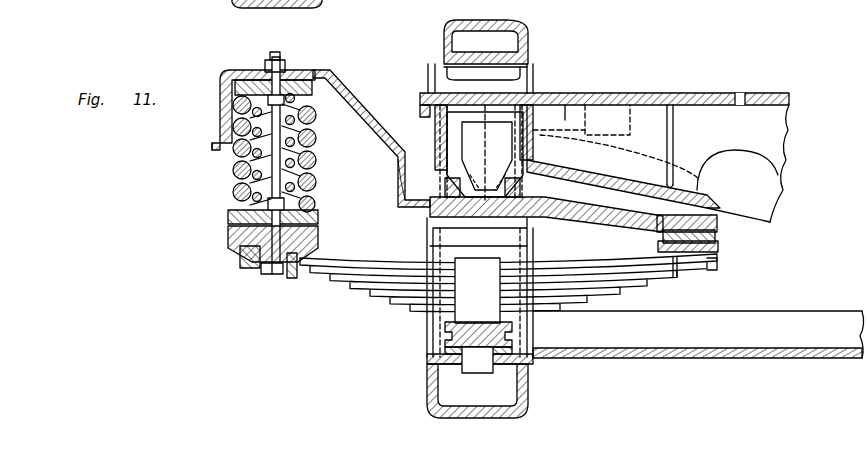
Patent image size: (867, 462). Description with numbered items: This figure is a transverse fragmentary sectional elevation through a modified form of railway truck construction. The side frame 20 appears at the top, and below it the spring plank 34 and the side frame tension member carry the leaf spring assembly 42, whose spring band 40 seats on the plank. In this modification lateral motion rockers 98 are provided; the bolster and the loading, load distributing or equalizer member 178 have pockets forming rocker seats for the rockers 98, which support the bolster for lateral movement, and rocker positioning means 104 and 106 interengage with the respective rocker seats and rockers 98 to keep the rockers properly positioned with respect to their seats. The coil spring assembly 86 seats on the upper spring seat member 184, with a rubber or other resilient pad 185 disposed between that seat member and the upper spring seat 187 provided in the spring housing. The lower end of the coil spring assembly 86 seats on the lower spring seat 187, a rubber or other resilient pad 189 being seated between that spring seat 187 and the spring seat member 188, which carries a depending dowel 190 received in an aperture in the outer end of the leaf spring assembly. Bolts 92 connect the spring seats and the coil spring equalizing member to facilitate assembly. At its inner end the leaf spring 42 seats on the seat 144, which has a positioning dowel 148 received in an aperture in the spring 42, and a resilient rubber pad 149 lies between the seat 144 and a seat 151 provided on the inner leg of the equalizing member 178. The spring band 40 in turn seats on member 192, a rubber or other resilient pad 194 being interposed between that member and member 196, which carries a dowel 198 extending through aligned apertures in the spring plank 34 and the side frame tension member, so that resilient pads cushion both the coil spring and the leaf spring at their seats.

The side frame 20 is at (490, 20).
The spring plank 34 is at (745, 358).
The spring band 40 is at (472, 283).
The leaf spring assembly 42 is at (372, 292).
The coil spring assembly 86 is at (233, 164).
The bolts 92 is at (276, 53).
The lateral motion rockers 98 is at (527, 100).
The rocker positioning means 104 is at (480, 120).
The rocker positioning means 106 is at (422, 212).
The seat 144 is at (719, 248).
The positioning dowel 148 is at (697, 272).
The rubber pad 149 is at (717, 238).
The seat 151 is at (693, 220).
The equalizer 178 is at (393, 130).
The upper spring seat member 184 is at (222, 78).
The resilient pad 185 is at (318, 70).
The spring seat 187 is at (252, 80).
The spring seat member 188 is at (240, 256).
The resilient pad 189 is at (228, 233).
The depending dowel 190 is at (266, 275).
The member 192 is at (514, 331).
The resilient pad 194 is at (533, 358).
The member 196 is at (444, 348).
The dowel 198 is at (470, 365).